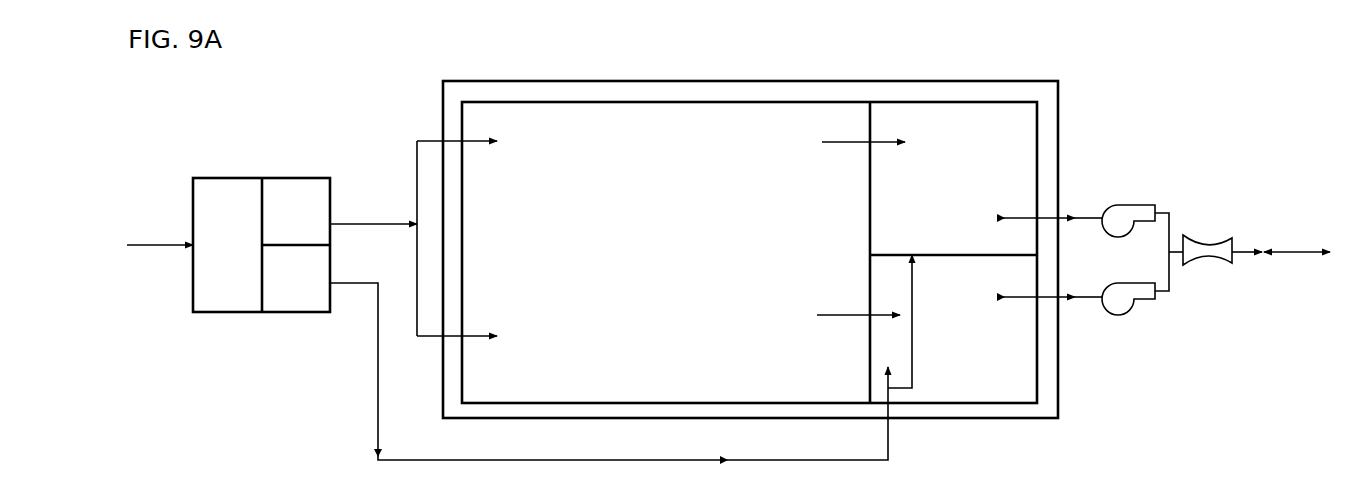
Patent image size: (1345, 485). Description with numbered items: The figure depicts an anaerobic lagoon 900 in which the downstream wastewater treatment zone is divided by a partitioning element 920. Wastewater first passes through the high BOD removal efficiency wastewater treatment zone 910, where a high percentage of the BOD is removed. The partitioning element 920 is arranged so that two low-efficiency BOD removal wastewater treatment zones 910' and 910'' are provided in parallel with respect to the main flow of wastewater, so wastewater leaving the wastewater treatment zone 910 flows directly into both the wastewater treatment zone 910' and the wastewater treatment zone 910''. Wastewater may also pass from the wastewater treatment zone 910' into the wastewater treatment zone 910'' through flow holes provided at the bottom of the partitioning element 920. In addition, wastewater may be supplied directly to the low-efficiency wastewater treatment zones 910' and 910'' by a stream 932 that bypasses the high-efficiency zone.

The anaerobic lagoon 900 is at (1074, 161).
The wastewater treatment zone 910 is at (749, 252).
The wastewater treatment zone 910'' is at (929, 178).
The wastewater treatment zone 910' is at (927, 329).
The partitioning element 920 is at (888, 255).
The stream 932 is at (893, 443).